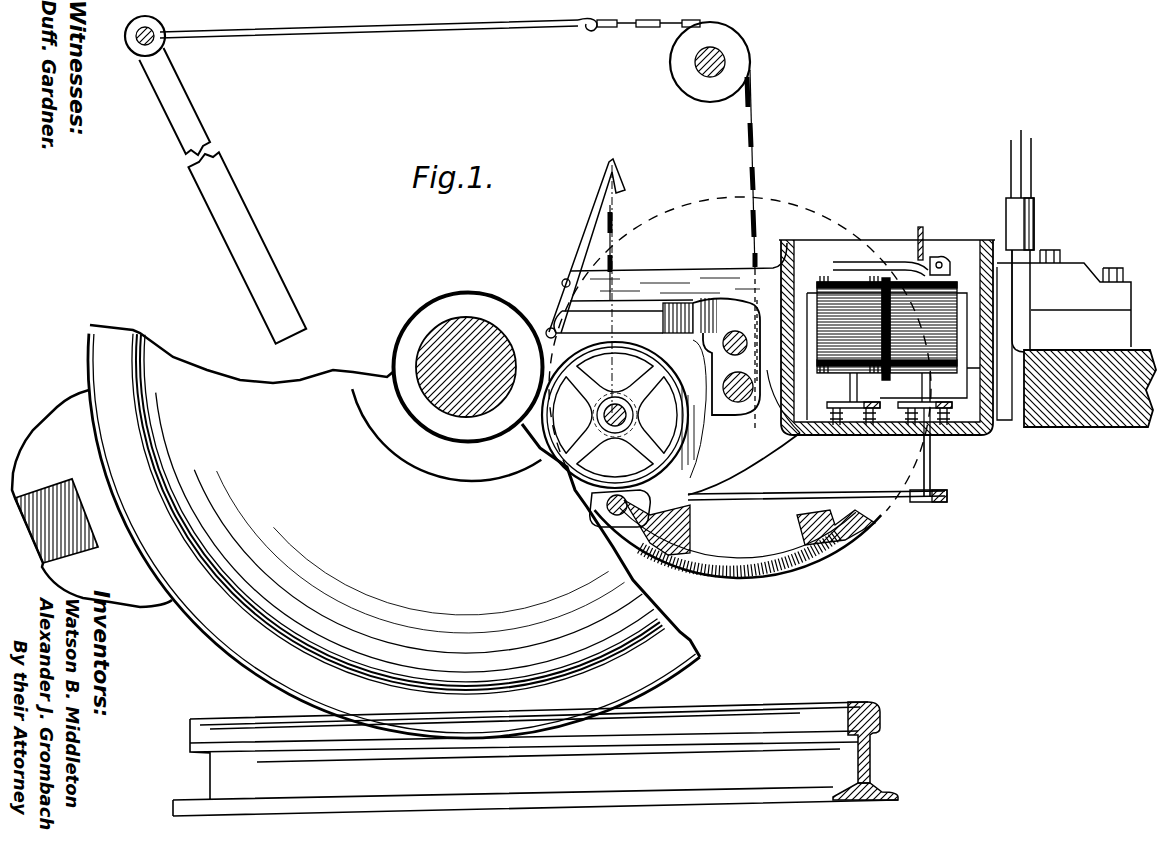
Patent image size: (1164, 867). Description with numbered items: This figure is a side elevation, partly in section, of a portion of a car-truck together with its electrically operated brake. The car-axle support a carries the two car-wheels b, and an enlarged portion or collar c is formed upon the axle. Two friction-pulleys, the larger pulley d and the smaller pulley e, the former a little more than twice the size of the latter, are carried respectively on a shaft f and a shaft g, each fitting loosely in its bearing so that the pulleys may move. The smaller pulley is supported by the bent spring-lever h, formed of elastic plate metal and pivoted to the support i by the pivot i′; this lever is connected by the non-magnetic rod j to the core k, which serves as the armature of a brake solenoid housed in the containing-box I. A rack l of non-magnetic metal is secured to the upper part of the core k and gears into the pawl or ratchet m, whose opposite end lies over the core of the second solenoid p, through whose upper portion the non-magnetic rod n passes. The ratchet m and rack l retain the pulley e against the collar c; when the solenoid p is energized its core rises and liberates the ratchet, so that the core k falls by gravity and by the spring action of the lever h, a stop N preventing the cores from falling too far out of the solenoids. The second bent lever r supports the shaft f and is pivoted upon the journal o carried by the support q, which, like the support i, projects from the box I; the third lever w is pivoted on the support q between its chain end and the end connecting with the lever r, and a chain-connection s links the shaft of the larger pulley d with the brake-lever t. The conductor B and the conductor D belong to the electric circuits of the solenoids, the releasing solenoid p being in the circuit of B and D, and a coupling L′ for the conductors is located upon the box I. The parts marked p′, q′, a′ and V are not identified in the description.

The brake-lever t is at (215, 180).
The chain-connection s is at (457, 225).
The friction-pulley d is at (740, 347).
The third lever w is at (588, 287).
The second bent lever r is at (670, 329).
The journal o is at (738, 359).
The support q is at (765, 341).
The shaft f is at (744, 417).
The collar c is at (447, 387).
The car-axle support a is at (466, 367).
The car-wheels b is at (356, 531).
The friction-pulley e is at (615, 415).
The shaft g is at (615, 415).
The pivot i′ is at (620, 508).
The support i is at (738, 481).
The wedge a′ is at (821, 528).
The bent lever h is at (778, 477).
The containing-box I is at (887, 330).
The conductor D is at (990, 436).
The solenoid p is at (842, 324).
The magnet coil p′ is at (925, 329).
The coil frame q′ is at (969, 330).
The non-magnetic rod n is at (840, 384).
The rack l is at (924, 238).
The pawl or ratchet m is at (949, 256).
The core k is at (932, 435).
The stop N is at (867, 412).
The non-magnetic rod j is at (947, 462).
The conductor B is at (1004, 335).
The coupling L′ is at (1025, 241).
The platform V is at (1076, 338).